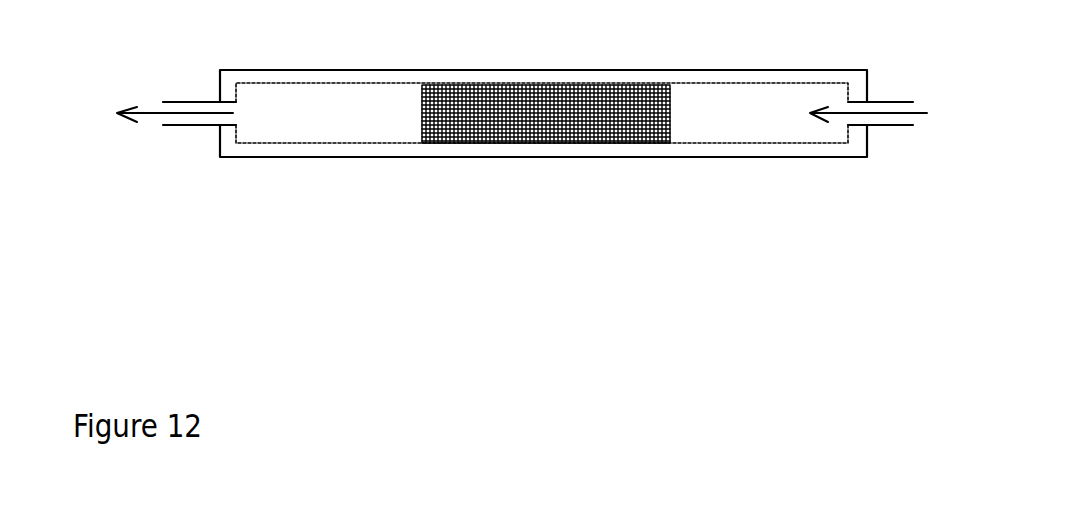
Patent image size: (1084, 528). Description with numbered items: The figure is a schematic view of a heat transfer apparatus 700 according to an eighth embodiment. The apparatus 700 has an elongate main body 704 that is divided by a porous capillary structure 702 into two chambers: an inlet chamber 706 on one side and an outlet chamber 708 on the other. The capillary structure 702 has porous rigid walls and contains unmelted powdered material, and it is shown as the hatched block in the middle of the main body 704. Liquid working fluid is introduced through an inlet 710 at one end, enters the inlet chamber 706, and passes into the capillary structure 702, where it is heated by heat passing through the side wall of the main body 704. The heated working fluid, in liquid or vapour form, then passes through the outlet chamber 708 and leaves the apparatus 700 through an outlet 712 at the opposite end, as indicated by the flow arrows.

The heat transfer apparatus 700 is at (501, 169).
The porous capillary structure 702 is at (625, 97).
The main body 704 is at (828, 150).
The inlet chamber 706 is at (778, 135).
The outlet chamber 708 is at (260, 135).
The inlet 710 is at (890, 100).
The outlet 712 is at (175, 102).